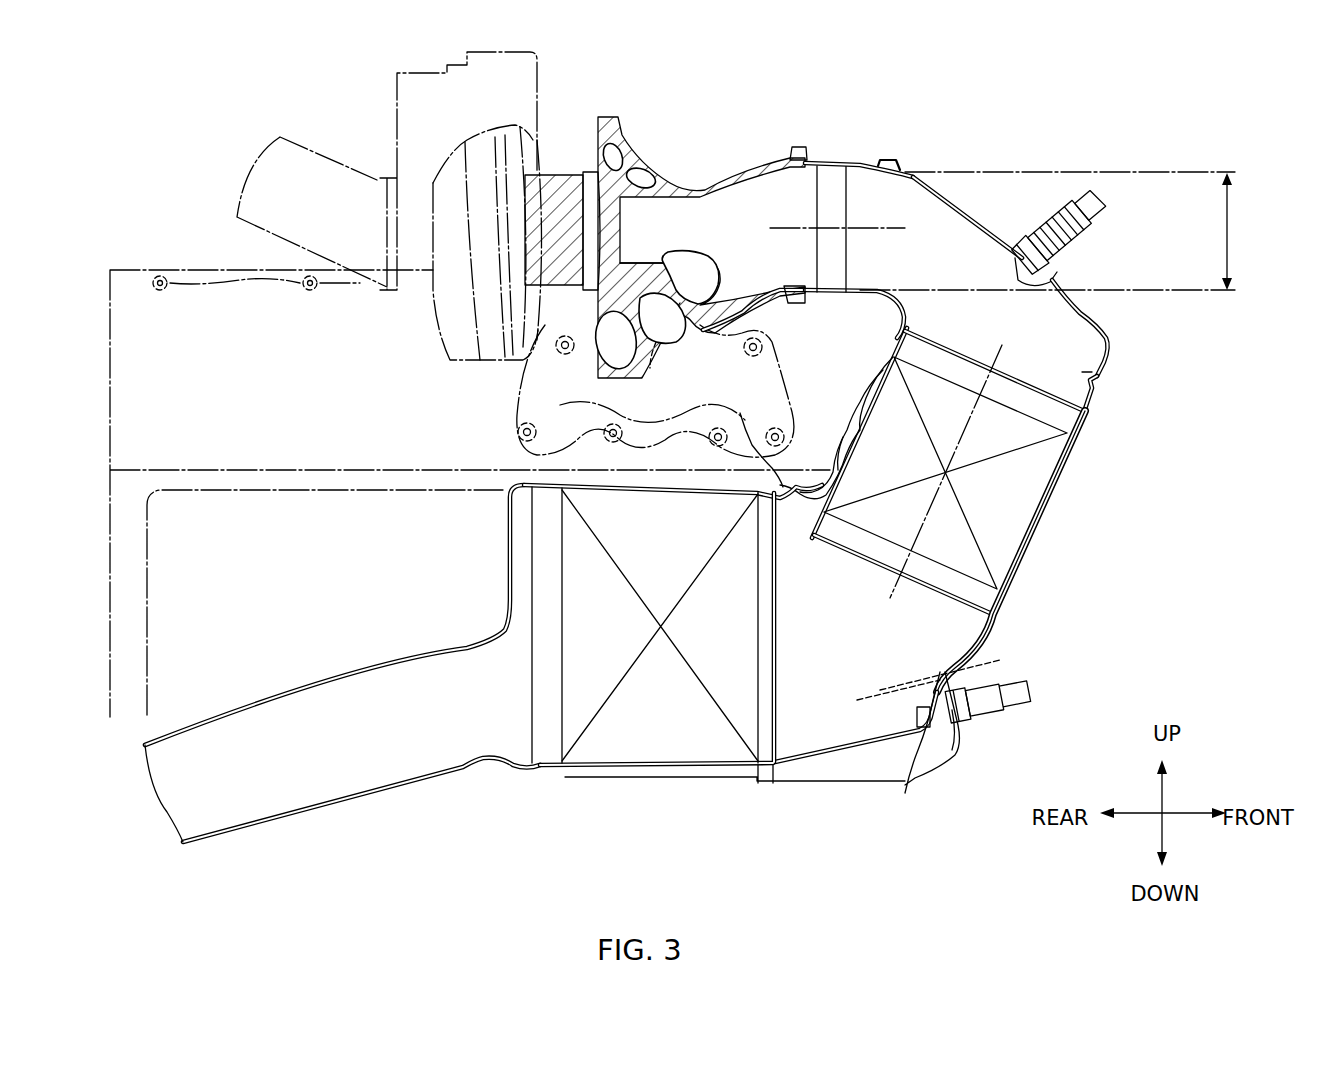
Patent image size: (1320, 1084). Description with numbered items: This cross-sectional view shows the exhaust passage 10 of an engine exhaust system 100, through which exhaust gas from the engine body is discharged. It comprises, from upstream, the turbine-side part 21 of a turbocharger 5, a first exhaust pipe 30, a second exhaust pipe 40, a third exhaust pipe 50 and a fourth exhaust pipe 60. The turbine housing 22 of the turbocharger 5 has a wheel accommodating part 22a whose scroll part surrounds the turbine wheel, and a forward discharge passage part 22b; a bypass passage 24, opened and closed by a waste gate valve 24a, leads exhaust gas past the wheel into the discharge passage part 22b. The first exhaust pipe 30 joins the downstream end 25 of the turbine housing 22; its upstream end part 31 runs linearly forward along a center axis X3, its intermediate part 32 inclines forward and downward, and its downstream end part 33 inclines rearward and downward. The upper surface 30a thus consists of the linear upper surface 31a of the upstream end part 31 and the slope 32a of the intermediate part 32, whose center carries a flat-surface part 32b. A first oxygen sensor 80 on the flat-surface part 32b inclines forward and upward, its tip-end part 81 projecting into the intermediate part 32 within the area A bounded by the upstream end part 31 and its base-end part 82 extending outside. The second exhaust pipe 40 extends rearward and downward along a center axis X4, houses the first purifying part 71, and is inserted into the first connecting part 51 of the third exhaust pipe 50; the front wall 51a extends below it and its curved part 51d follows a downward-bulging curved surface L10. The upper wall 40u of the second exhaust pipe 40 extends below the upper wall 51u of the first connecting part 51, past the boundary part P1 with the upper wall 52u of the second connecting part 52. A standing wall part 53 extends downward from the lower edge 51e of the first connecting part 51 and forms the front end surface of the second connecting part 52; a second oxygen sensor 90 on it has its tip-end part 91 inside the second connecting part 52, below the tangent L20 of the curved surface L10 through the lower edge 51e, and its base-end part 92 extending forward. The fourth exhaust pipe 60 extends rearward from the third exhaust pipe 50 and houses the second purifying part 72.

The turbocharger 5 is at (571, 132).
The exhaust passage 10 is at (483, 775).
The turbine-side part 21 is at (737, 132).
The turbine housing 22 is at (663, 175).
The wheel accommodating part 22a is at (660, 242).
The discharge passage part 22b is at (755, 242).
The bypass passage 24 is at (696, 345).
The waste gate valve 24a is at (657, 352).
The downstream end 25 is at (801, 147).
The first exhaust pipe 30 is at (1126, 346).
The upper surface 30a is at (872, 98).
The upstream end part 31 is at (866, 160).
The upper surface of upstream end part 31a is at (893, 170).
The intermediate part 32 is at (1090, 322).
The slope 32a is at (945, 190).
The flat-surface part 32b is at (958, 203).
The downstream end part 33 is at (1092, 380).
The second exhaust pipe 40 is at (1072, 442).
The upper wall of second exhaust pipe 40u is at (860, 395).
The third exhaust pipe 50 is at (862, 642).
The first connecting part 51 is at (1032, 545).
The front wall 51a is at (1025, 585).
The curved part 51d is at (975, 648).
The lower edge 51e is at (957, 677).
The upper wall of first connecting part 51u is at (843, 437).
The second connecting part 52 is at (846, 781).
The upper wall of second connecting part 52u is at (749, 437).
The standing wall part 53 is at (948, 760).
The fourth exhaust pipe 60 is at (708, 770).
The first purifying part 71 is at (890, 357).
The second purifying part 72 is at (645, 740).
The first oxygen sensor 80 is at (1080, 236).
The tip-end part 81 is at (1029, 228).
The base-end part 82 is at (1102, 248).
The second oxygen sensor 90 is at (1026, 730).
The tip-end part 91 is at (909, 745).
The base-end part 92 is at (987, 733).
The exhaust system 100 is at (340, 612).
The area A is at (1055, 231).
The center axis X3 is at (792, 228).
The center axis X4 is at (935, 510).
The boundary part P1 is at (806, 487).
The curved surface L10 is at (898, 668).
The tangent L20 is at (875, 682).